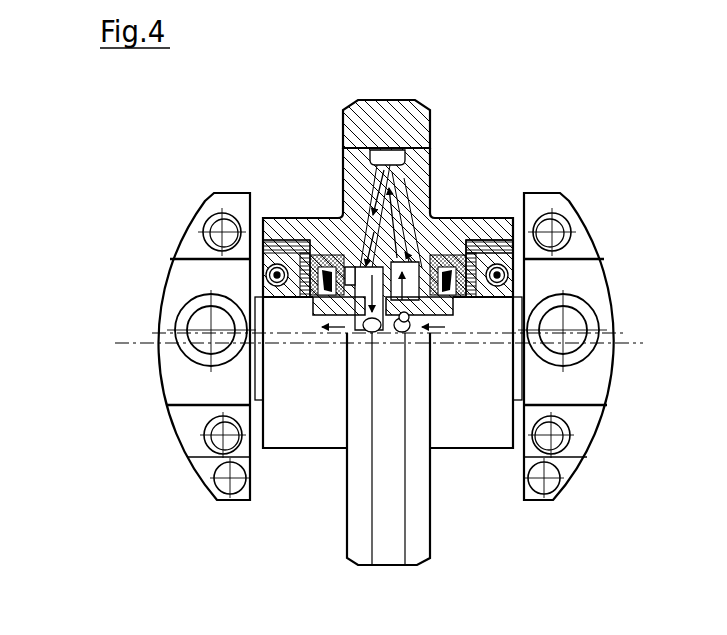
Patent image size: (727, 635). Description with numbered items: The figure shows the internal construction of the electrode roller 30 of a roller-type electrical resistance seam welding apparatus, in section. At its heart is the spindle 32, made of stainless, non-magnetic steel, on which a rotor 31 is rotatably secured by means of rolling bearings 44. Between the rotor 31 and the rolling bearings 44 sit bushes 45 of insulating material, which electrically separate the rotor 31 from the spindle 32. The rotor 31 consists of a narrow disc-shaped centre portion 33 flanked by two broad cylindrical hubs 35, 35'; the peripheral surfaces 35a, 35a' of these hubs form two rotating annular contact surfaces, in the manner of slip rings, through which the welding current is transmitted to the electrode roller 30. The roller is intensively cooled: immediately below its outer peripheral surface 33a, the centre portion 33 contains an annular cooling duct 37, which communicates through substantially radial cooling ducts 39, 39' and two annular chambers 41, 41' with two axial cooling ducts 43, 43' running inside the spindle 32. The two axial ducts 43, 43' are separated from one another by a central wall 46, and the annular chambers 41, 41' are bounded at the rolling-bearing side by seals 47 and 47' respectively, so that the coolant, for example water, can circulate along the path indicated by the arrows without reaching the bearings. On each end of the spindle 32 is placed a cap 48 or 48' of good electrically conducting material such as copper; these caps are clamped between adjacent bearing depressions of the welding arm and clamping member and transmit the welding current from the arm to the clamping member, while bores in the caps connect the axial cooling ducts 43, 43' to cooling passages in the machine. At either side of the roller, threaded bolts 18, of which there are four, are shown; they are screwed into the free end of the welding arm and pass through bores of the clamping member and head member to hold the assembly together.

The threaded bolts 18 is at (218, 223).
The electrode roller 30 is at (262, 125).
The rotor 31 is at (347, 165).
The spindle 32 is at (257, 362).
The centre portion 33 is at (420, 525).
The outer peripheral surface 33a is at (362, 567).
The cylindrical hub 35 is at (463, 192).
The cylindrical hub 35' is at (284, 216).
The peripheral surface 35a is at (471, 407).
The peripheral surface 35a' is at (305, 407).
The annular cooling duct 37 is at (395, 150).
The radial cooling duct 39 is at (317, 209).
The radial cooling duct 39' is at (440, 194).
The annular chamber 41 is at (316, 326).
The annular chamber 41' is at (448, 326).
The axial cooling duct 43 is at (443, 355).
The axial cooling duct 43' is at (327, 353).
The rolling bearings 44 is at (518, 282).
The bushes 45 is at (489, 245).
The central wall 46 is at (380, 332).
The seal 47 is at (533, 192).
The seal 47' is at (245, 200).
The cap 48 is at (590, 346).
The cap 48' is at (178, 346).